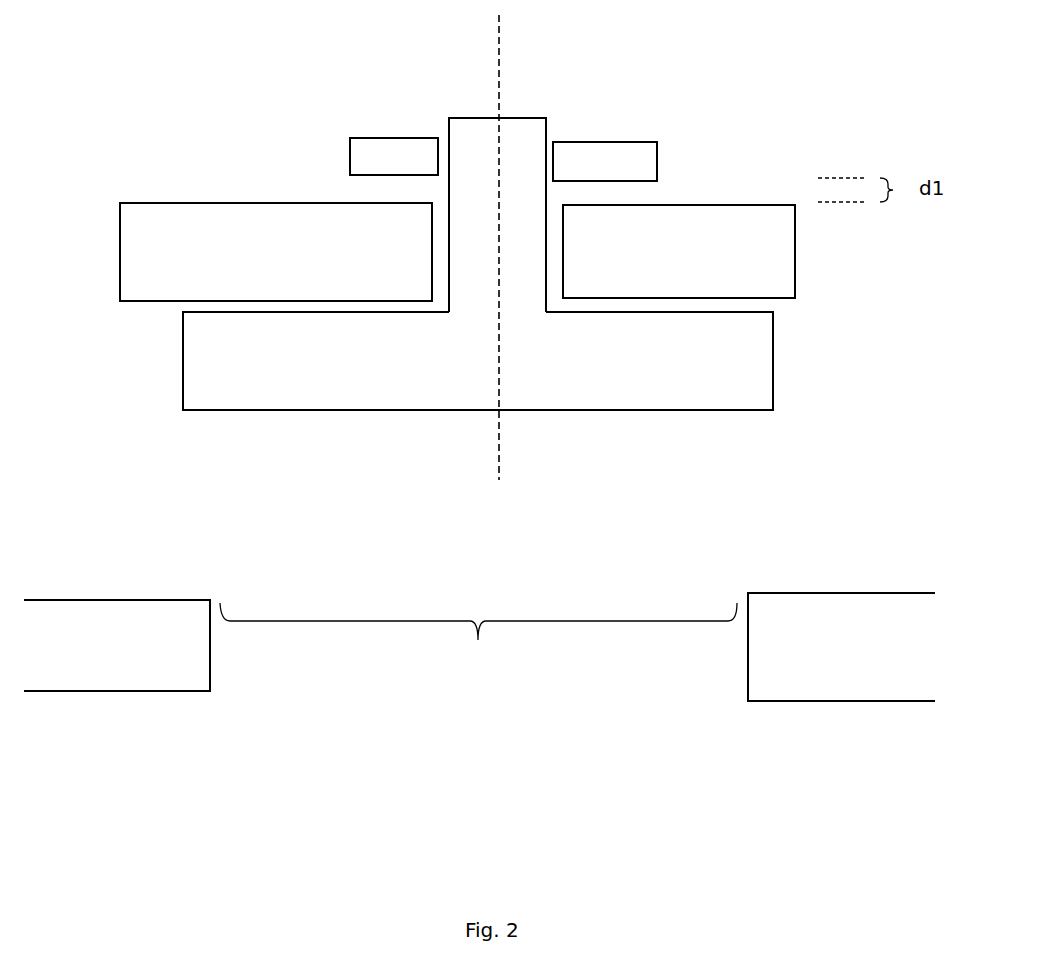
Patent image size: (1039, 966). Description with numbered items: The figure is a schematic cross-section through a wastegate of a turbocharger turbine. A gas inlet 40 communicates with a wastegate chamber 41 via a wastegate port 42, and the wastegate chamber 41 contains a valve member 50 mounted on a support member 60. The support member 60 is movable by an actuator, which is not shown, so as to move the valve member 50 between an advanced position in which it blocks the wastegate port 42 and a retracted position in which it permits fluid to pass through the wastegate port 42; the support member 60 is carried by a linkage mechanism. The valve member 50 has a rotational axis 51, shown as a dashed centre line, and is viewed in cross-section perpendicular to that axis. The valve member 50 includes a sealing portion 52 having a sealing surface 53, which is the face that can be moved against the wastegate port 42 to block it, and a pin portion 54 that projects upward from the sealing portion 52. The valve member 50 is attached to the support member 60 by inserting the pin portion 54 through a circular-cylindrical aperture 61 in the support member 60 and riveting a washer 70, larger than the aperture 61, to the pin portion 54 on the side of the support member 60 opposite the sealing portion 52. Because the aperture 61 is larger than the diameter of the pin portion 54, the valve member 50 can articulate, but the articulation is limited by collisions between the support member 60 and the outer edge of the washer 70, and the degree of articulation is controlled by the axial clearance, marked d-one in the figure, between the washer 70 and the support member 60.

The gas inlet 40 is at (585, 757).
The wastegate chamber 41 is at (184, 75).
The wastegate port 42 is at (478, 646).
The valve member 50 is at (441, 327).
The rotational axis 51 is at (502, 80).
The sealing portion 52 is at (220, 387).
The sealing surface 53 is at (327, 409).
The pin portion 54 is at (472, 152).
The support member 60 is at (291, 203).
The circular-cylindrical aperture 61 is at (432, 203).
The washer 70 is at (633, 141).